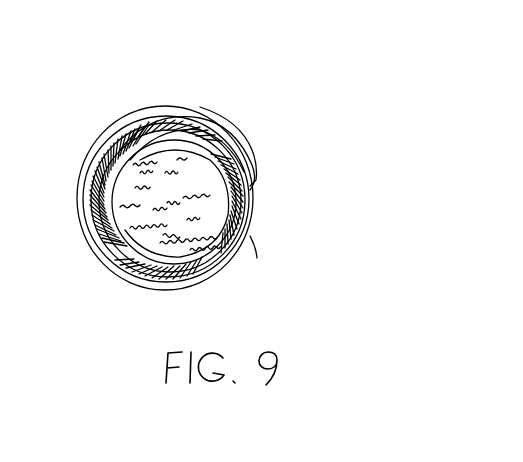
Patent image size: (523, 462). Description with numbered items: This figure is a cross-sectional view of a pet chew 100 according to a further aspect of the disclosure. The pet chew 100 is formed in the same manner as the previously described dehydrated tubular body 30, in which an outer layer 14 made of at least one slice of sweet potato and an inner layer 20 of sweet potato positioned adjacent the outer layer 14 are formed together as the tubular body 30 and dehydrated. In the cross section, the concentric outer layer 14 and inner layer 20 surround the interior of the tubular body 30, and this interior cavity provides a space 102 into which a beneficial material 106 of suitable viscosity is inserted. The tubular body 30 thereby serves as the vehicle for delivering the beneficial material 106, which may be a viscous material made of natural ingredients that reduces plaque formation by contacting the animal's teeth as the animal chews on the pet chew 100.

The pet chew 100 is at (236, 96).
The inner layer 20 is at (99, 162).
The outer layer 14 is at (87, 184).
The space 102 is at (187, 130).
The beneficial material 106 is at (118, 240).
The tubular body 30 is at (268, 252).